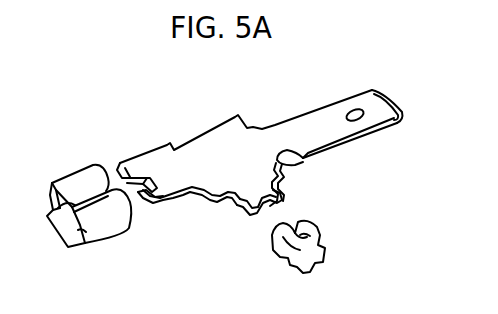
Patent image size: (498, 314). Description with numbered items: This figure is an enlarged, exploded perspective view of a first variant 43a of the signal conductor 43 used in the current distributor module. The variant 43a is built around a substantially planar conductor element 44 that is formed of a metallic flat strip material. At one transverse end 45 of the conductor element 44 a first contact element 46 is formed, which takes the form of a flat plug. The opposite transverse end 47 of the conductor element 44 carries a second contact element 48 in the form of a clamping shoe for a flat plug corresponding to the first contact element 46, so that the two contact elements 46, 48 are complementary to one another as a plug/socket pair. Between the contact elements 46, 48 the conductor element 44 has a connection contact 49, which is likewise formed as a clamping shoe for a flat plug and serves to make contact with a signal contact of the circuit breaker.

The signal conductor 43 is at (82, 145).
The first variant of the signal conductor 43a is at (89, 206).
The conductor element 44 is at (203, 125).
The transverse end 45 is at (322, 122).
The first contact element 46 is at (388, 133).
The opposite transverse end 47 is at (177, 177).
The second contact element 48 is at (143, 216).
The connection contact 49 is at (288, 213).